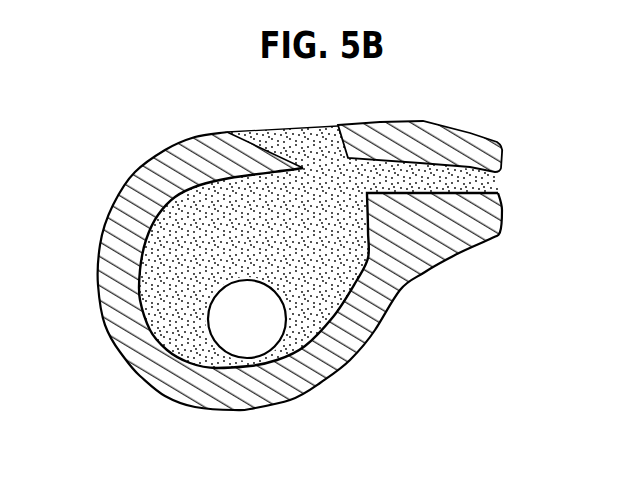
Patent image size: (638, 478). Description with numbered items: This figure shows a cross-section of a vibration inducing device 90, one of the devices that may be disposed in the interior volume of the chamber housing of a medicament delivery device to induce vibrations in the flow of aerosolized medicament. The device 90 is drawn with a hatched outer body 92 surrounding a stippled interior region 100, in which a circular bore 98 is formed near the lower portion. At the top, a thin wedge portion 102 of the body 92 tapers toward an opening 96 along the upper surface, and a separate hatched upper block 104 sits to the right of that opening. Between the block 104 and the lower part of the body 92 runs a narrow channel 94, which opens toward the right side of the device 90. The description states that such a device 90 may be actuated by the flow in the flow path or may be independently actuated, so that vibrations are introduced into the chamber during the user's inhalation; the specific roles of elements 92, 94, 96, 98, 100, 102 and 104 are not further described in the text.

The vibration inducing device 90 is at (414, 318).
The jaw body 92 is at (175, 390).
The channel 94 is at (508, 188).
The top surface opening 96 is at (280, 131).
The pivot bore 98 is at (243, 343).
The filled cavity 100 is at (172, 299).
The wedge portion 102 is at (258, 166).
The upper block 104 is at (321, 131).